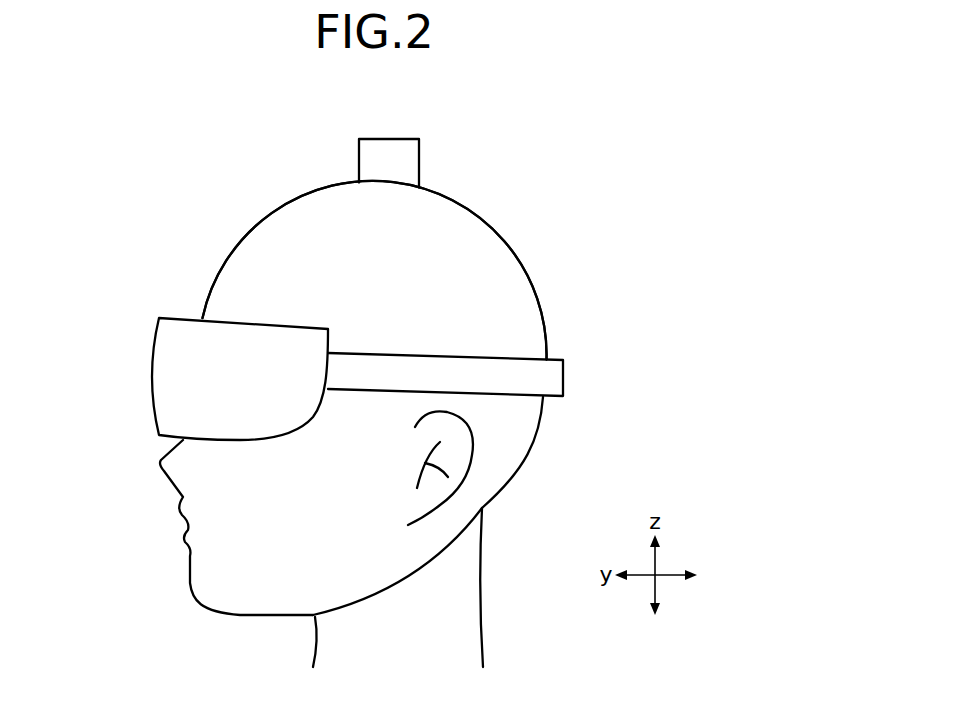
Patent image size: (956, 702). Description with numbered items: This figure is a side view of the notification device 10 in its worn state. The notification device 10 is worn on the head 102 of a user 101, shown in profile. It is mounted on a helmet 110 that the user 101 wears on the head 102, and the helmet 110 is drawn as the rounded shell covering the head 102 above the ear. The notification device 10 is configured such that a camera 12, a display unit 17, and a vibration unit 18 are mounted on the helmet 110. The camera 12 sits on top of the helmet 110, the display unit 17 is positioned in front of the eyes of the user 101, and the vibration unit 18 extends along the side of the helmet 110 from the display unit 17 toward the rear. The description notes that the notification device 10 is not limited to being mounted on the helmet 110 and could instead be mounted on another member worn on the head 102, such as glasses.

The notification device 10 is at (337, 253).
The camera 12 is at (388, 150).
The display unit 17 is at (172, 382).
The vibration unit 18 is at (548, 378).
The user 101 is at (347, 426).
The head 102 is at (475, 265).
The helmet 110 is at (252, 257).